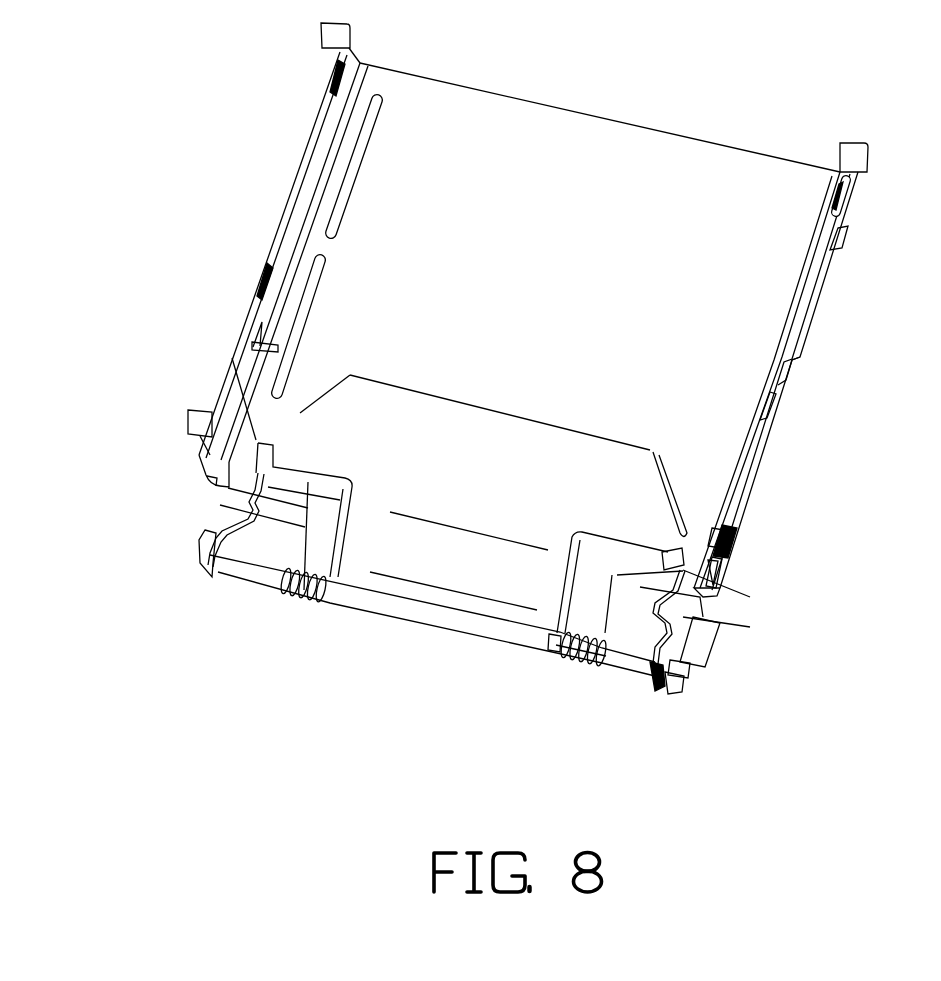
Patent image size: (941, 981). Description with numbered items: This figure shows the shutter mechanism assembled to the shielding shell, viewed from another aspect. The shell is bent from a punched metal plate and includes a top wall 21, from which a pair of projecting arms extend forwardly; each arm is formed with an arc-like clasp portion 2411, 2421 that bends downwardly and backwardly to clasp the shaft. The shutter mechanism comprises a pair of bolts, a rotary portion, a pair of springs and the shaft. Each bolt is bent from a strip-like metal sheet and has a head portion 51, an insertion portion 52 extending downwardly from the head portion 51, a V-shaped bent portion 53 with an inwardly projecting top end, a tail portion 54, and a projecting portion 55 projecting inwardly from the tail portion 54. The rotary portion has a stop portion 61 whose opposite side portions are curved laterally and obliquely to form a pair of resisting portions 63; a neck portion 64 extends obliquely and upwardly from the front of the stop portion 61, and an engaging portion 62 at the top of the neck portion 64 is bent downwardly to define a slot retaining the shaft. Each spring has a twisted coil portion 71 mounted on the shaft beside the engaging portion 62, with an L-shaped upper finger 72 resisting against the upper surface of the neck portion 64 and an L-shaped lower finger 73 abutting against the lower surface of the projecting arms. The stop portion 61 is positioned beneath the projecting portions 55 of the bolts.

The top wall 21 is at (698, 373).
The stop portion 61 is at (612, 472).
The resisting portions 63 is at (322, 432).
The projecting portion 55 is at (256, 470).
The tail portion 54 is at (684, 578).
The V-shaped bent portion 53 is at (707, 597).
The head portion 51 is at (685, 668).
The clasp portion 2421 is at (670, 682).
The insertion portion 52 is at (653, 692).
The clasp portion 2411 is at (242, 568).
The engaging portion 62 is at (427, 608).
The neck portion 64 is at (407, 550).
The lower finger 73 is at (293, 593).
The coil portion 71 is at (590, 660).
The upper finger 72 is at (547, 650).